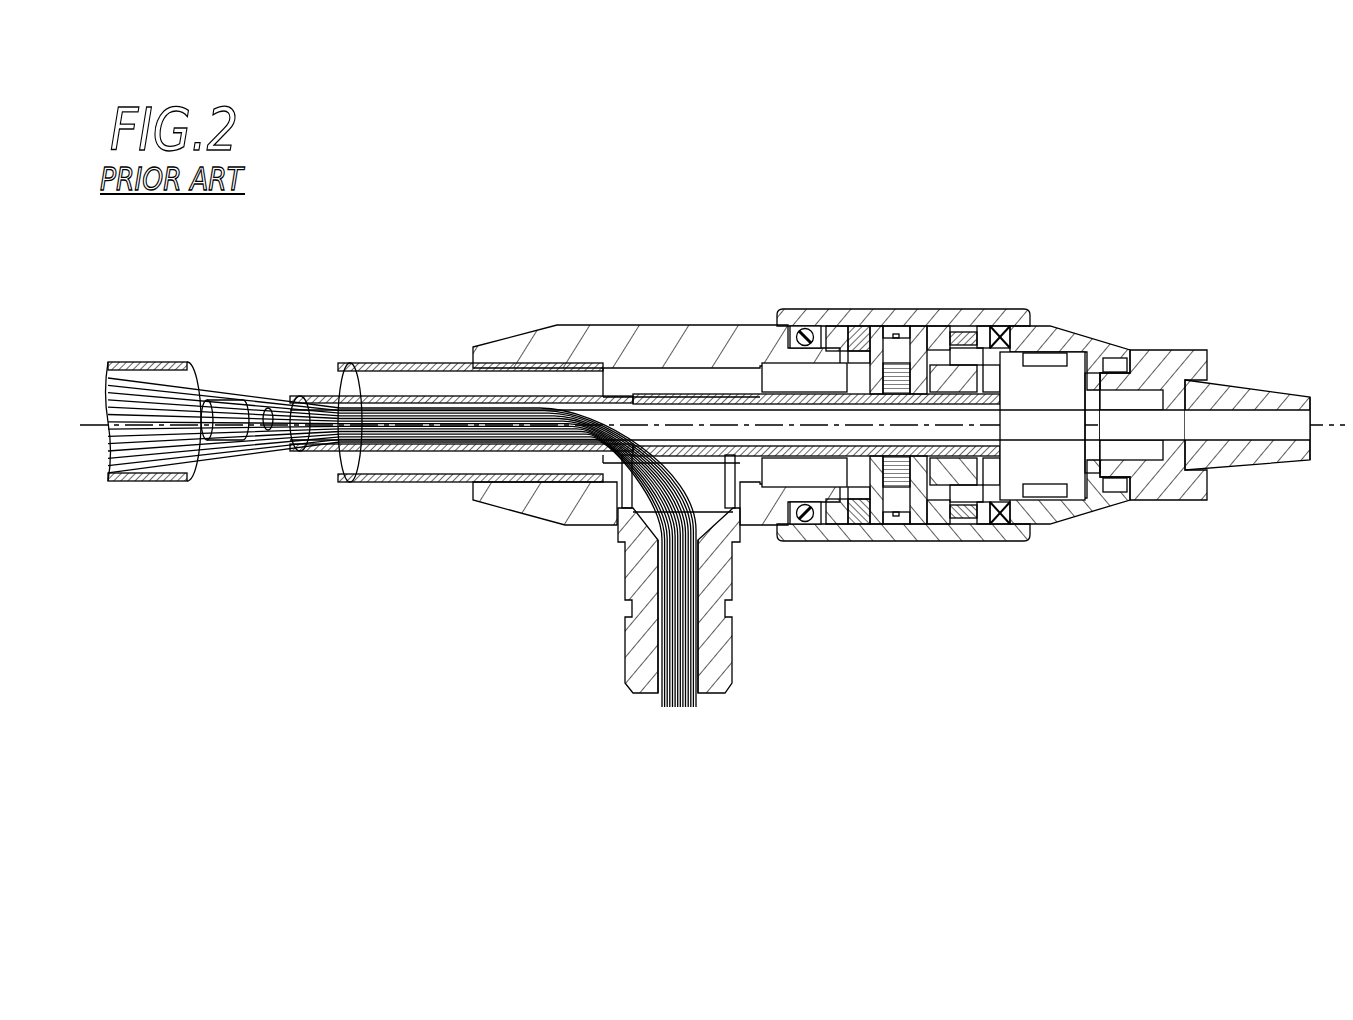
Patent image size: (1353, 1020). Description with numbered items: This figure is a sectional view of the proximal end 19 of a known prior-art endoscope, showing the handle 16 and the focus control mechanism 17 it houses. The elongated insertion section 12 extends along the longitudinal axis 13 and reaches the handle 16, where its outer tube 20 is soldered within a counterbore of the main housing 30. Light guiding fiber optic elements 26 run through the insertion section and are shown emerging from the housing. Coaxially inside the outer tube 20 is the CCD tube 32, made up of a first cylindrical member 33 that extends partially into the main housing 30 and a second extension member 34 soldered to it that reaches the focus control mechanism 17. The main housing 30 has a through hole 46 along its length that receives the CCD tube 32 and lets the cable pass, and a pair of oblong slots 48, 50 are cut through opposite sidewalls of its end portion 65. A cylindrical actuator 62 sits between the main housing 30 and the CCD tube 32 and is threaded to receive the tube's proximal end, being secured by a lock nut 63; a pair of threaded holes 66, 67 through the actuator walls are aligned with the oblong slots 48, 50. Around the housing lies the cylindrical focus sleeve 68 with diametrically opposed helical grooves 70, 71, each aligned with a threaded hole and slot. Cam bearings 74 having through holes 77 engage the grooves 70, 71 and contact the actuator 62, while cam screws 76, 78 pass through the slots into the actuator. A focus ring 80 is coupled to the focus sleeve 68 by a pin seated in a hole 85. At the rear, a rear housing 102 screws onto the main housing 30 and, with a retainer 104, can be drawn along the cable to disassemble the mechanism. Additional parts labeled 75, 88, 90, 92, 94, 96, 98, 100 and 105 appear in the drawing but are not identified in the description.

The elongated insertion section 12 is at (368, 505).
The longitudinal axis 13 is at (1282, 442).
The handle 16 is at (573, 310).
The focus control mechanism 17 is at (827, 300).
The proximal end 19 is at (1145, 516).
The outer tube 20 is at (441, 483).
The light guiding fiber optic elements 26 is at (660, 703).
The main housing 30 is at (515, 498).
The CCD tube 32 is at (415, 380).
The first cylindrical member 33 is at (305, 450).
The second extension member 34 is at (712, 393).
The through hole 46 is at (1065, 477).
The oblong slot 48 is at (960, 331).
The oblong slot 50 is at (847, 535).
The cylindrical actuator 62 is at (832, 490).
The lock nut 63 is at (1000, 377).
The end portion 65 is at (1058, 358).
The threaded hole 66 is at (967, 470).
The threaded hole 67 is at (878, 330).
The cylindrical focus sleeve 68 is at (860, 325).
The helical groove 70 is at (920, 328).
The helical groove 71 is at (902, 532).
The cam bearing 74 is at (955, 532).
The upper cavity 75 is at (855, 384).
The cam screw 76 is at (903, 330).
The through hole 77 is at (857, 532).
The cam screw 78 is at (893, 532).
The focus ring 80 is at (1000, 326).
The hole 85 is at (800, 326).
The upper passage 88 is at (812, 353).
The lower screw 90 is at (822, 533).
The sleeve 92 is at (612, 525).
The fitting body 94 is at (637, 640).
The fitting wall 96 is at (722, 657).
The lower passage 98 is at (795, 530).
The lower O-ring 100 is at (1010, 528).
The rear housing 102 is at (1093, 528).
The retainer 104 is at (1185, 352).
The strain relief boot 105 is at (1288, 398).